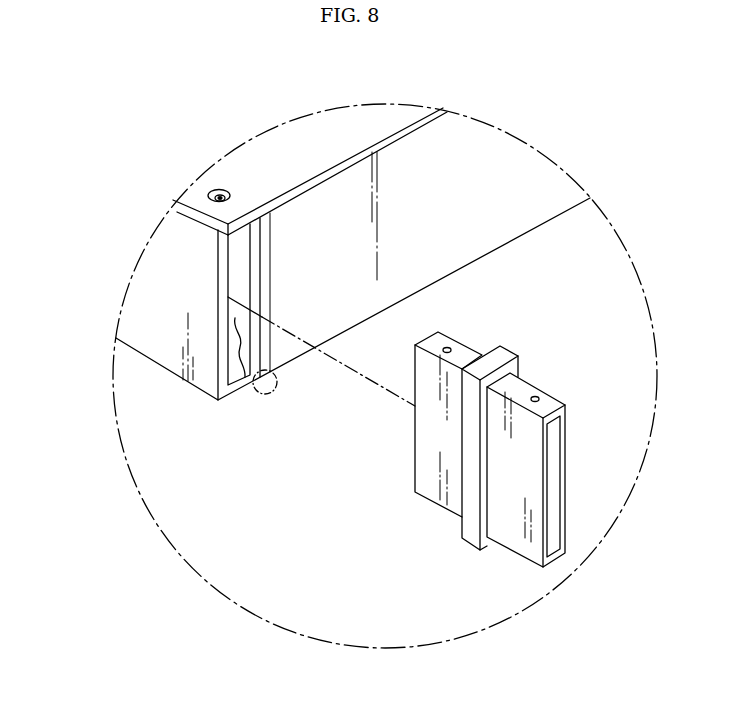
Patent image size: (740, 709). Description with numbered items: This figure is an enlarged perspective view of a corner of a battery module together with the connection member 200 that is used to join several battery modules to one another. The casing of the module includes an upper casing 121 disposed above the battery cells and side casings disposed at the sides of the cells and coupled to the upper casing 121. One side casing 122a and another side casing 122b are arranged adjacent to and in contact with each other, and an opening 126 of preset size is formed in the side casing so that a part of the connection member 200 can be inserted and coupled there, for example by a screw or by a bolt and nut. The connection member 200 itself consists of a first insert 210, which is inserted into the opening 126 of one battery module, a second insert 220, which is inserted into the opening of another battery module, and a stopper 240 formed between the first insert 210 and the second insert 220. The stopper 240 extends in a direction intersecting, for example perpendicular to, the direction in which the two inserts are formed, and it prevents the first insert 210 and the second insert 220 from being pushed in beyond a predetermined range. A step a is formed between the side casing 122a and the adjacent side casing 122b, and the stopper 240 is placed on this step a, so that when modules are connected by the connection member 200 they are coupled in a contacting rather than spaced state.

The upper casing 121 is at (294, 144).
The side casing 122a is at (157, 291).
The side casing 122b is at (500, 170).
The opening 126 is at (253, 381).
The connection member 200 is at (454, 441).
The first insert 210 is at (463, 353).
The second insert 220 is at (527, 390).
The stopper 240 is at (470, 430).
The step a is at (274, 391).